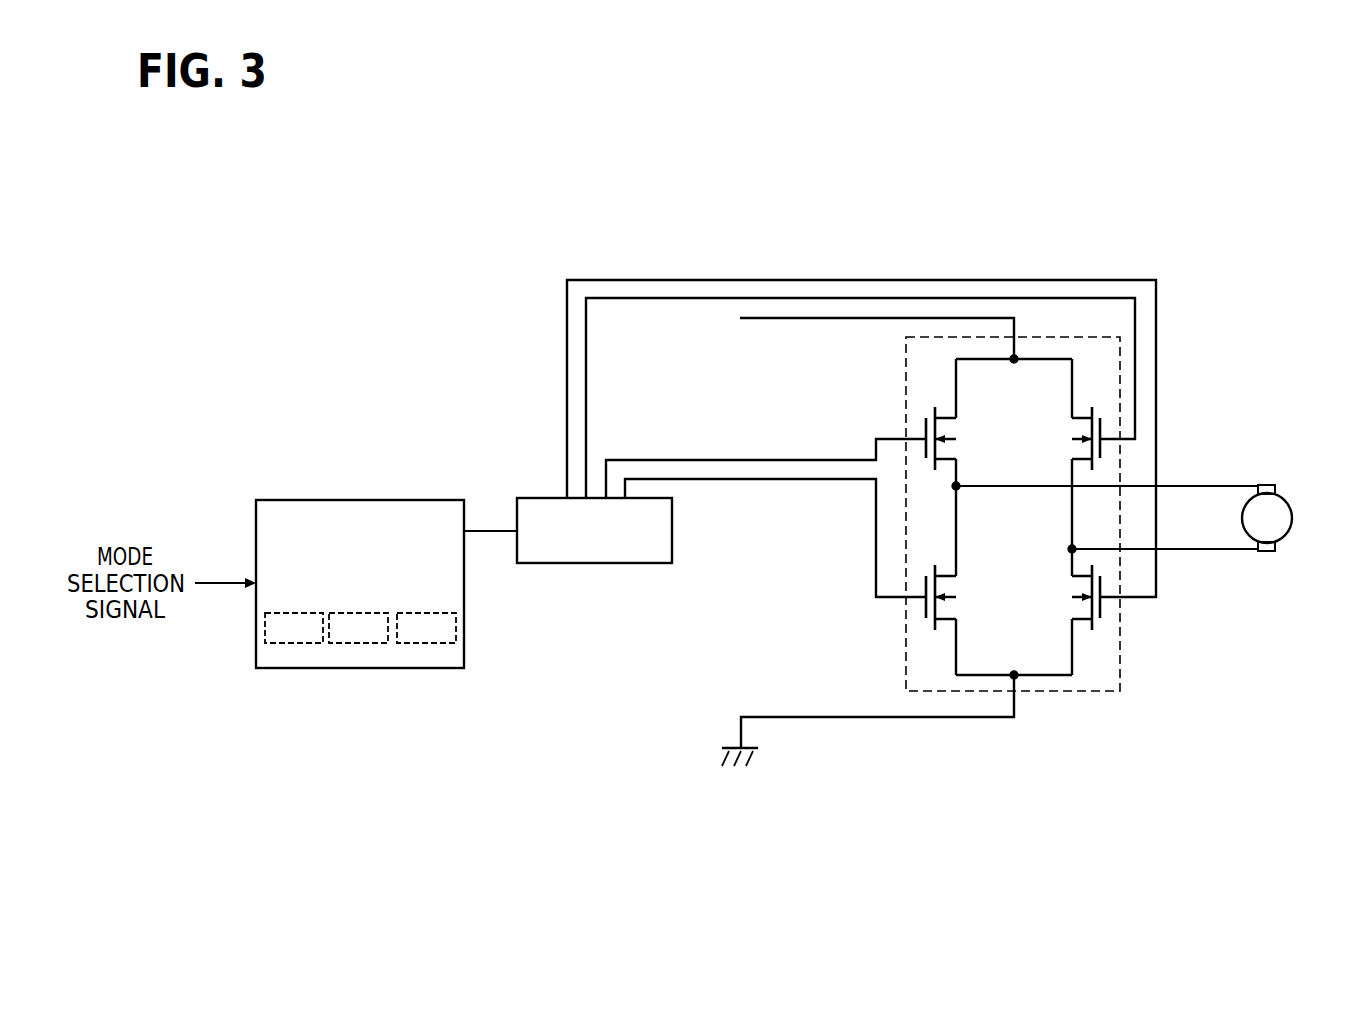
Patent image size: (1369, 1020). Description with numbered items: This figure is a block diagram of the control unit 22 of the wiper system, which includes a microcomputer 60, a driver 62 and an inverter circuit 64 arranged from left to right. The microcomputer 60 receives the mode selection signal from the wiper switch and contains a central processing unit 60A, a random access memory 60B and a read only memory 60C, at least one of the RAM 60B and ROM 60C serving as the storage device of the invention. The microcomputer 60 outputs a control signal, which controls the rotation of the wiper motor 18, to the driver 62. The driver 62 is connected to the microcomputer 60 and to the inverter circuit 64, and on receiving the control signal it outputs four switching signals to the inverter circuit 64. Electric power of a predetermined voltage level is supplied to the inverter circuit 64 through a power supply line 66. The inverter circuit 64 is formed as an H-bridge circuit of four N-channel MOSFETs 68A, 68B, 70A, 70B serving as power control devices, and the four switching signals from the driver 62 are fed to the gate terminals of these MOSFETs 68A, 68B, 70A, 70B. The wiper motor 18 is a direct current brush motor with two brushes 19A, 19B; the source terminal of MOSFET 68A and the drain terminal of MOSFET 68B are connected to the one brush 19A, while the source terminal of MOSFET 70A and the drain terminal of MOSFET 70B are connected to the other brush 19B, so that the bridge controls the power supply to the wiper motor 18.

The wiper motor 18 is at (1292, 502).
The brush 19A is at (1268, 483).
The brush 19B is at (1266, 553).
The control unit 22 is at (957, 224).
The microcomputer 60 is at (402, 498).
The central processing unit (CPU) 60A is at (298, 645).
The random access memory (RAM) 60B is at (360, 645).
The read only memory (ROM) 60C is at (428, 645).
The driver 62 is at (598, 566).
The inverter circuit 64 is at (1040, 337).
The power supply line 66 is at (836, 322).
The MOSFET 68A is at (970, 433).
The MOSFET 68B is at (970, 601).
The MOSFET 70A is at (1054, 433).
The MOSFET 70B is at (1054, 601).